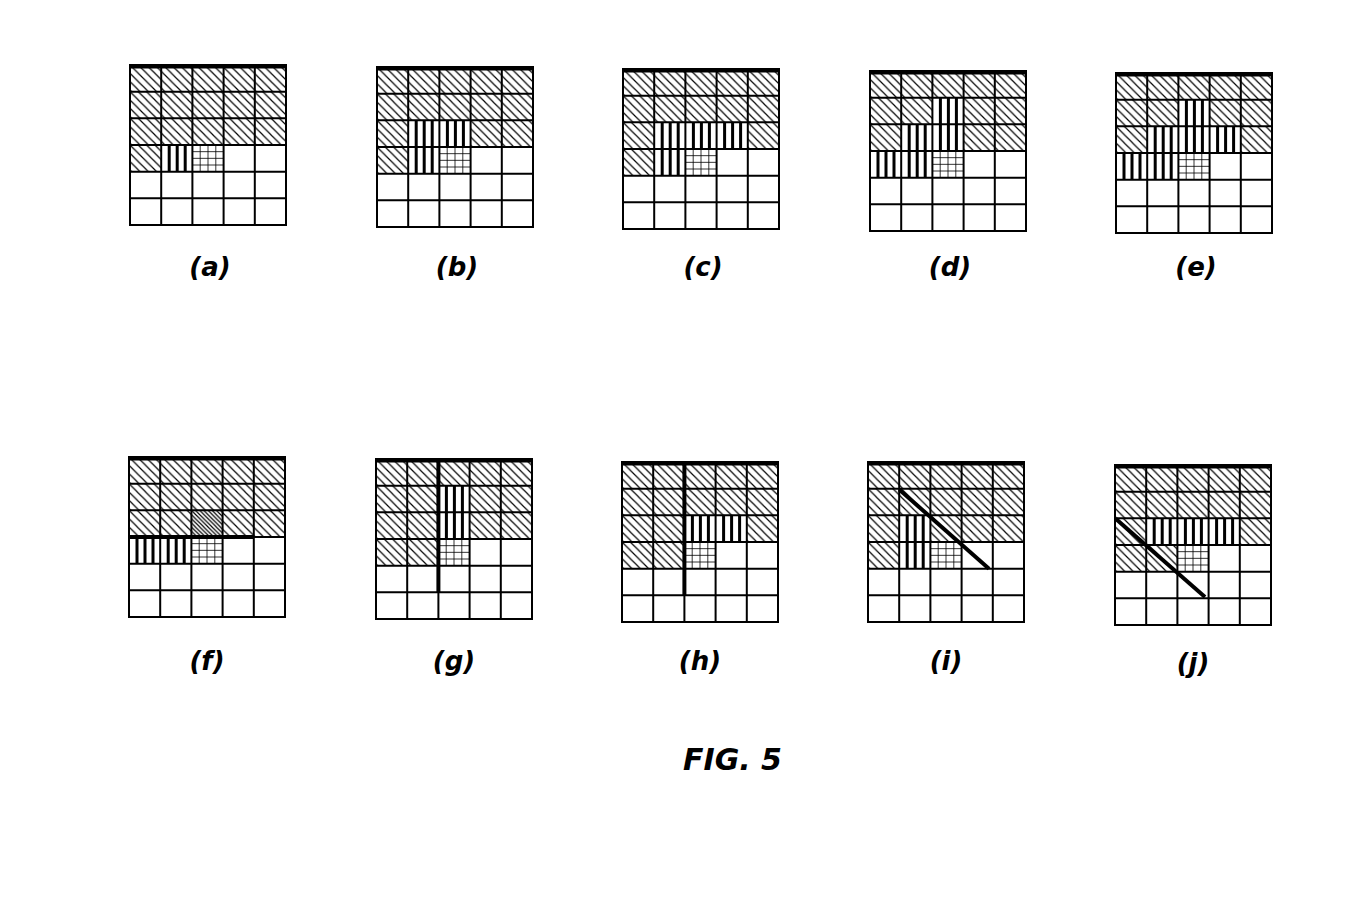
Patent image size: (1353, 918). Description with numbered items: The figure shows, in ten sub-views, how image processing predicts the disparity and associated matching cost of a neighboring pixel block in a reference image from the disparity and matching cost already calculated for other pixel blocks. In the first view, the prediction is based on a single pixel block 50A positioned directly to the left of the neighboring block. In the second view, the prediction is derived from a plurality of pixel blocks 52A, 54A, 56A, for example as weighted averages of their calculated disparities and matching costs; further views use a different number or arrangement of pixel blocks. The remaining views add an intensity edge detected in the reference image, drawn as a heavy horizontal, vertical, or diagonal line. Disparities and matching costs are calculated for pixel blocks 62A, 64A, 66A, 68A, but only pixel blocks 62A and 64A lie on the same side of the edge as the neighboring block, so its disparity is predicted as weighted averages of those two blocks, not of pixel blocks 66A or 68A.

The single pixel block 50A is at (121, 176).
The pixel block 52A is at (370, 177).
The pixel block 54A is at (410, 84).
The pixel block 56A is at (474, 81).
The pixel block 62A is at (101, 563).
The pixel block 64A is at (123, 600).
The pixel block 66A is at (207, 473).
The pixel block 68A is at (224, 470).